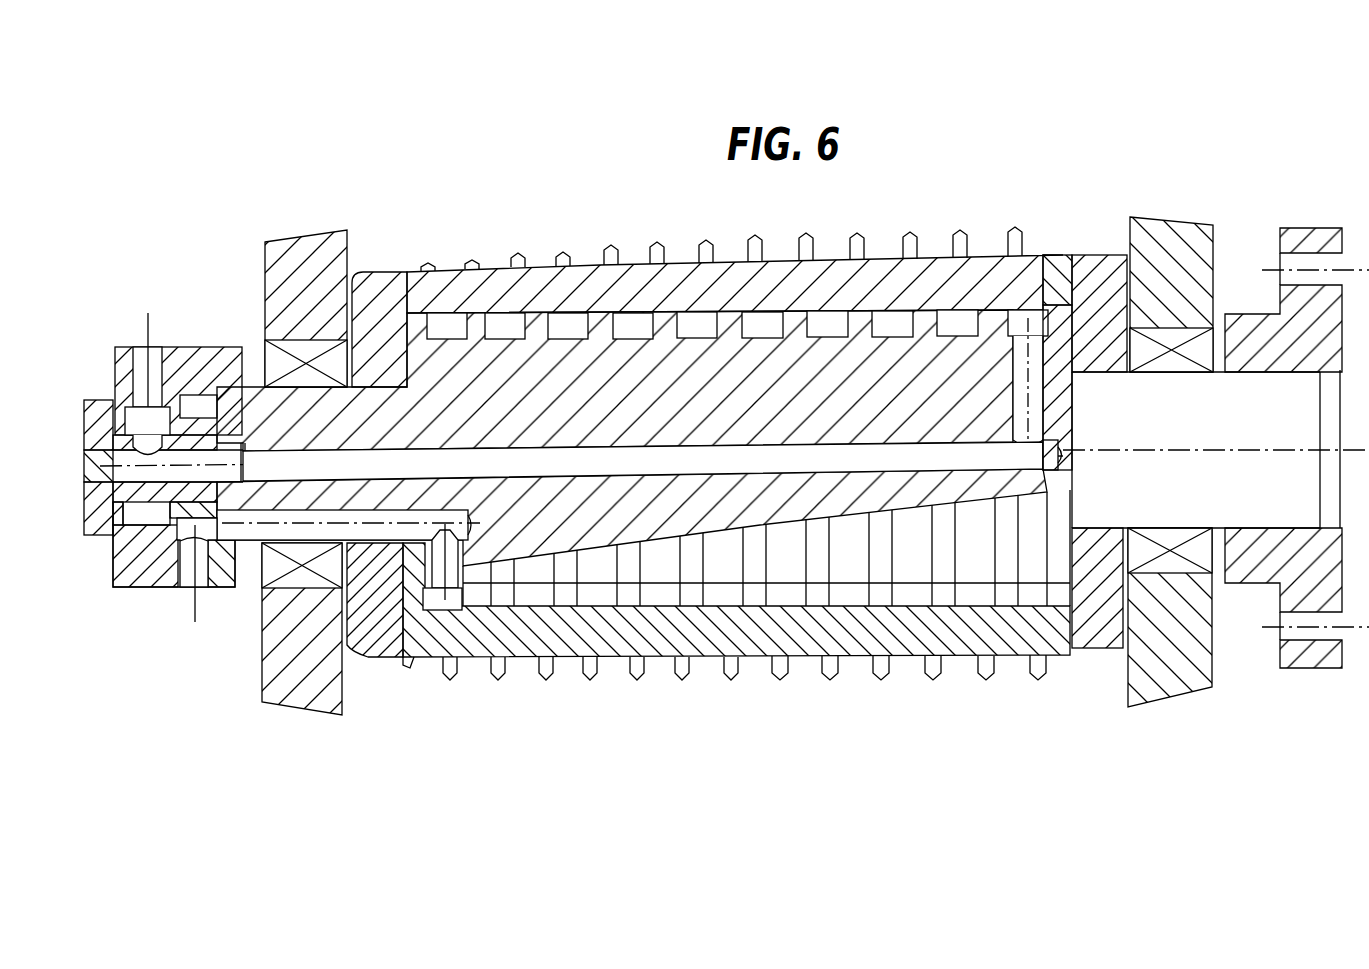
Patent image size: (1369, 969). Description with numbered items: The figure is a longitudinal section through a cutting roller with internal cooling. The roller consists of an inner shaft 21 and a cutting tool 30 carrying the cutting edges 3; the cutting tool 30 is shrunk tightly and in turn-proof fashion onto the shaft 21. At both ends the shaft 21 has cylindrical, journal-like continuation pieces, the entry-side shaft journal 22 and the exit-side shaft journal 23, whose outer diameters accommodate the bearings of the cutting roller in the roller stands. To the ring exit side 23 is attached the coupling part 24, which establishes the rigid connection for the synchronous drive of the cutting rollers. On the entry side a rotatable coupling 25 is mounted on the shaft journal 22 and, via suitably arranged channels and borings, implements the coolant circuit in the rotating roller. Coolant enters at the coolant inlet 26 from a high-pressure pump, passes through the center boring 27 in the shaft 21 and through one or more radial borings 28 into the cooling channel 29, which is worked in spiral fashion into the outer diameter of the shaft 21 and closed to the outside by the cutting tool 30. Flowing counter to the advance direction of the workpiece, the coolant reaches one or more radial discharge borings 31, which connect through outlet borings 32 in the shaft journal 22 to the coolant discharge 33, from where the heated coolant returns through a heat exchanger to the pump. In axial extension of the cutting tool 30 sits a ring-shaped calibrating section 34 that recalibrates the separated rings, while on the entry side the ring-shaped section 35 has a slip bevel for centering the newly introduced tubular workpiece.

The cutting edges 3 is at (932, 672).
The shaft 21 is at (452, 383).
The shaft journal 22 is at (330, 405).
The shaft journal (ring exit side) 23 is at (1112, 420).
The coupling part 24 is at (1272, 338).
The rotatable coupling 25 is at (195, 353).
The coolant inlet 26 is at (143, 358).
The center boring 27 is at (612, 463).
The radial boring 28 is at (1022, 353).
The cooling channel 29 is at (568, 325).
The cutting tool 30 is at (692, 283).
The radial discharge boring 31 is at (440, 565).
The outlet boring 32 is at (253, 531).
The coolant discharge 33 is at (188, 573).
The ring-shaped calibrating section 34 is at (1087, 627).
The ring-shaped section 35 is at (383, 628).